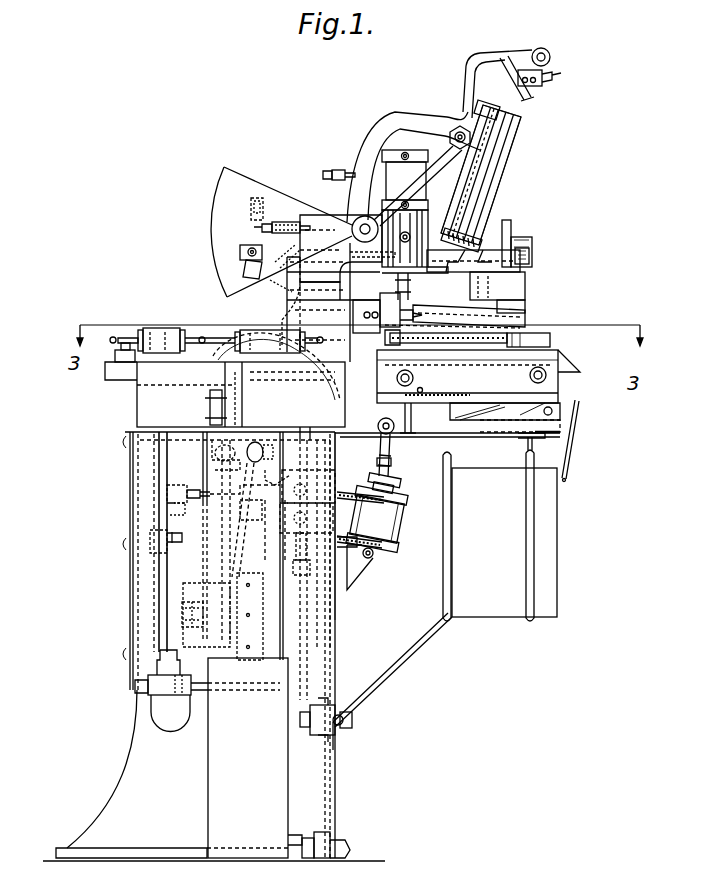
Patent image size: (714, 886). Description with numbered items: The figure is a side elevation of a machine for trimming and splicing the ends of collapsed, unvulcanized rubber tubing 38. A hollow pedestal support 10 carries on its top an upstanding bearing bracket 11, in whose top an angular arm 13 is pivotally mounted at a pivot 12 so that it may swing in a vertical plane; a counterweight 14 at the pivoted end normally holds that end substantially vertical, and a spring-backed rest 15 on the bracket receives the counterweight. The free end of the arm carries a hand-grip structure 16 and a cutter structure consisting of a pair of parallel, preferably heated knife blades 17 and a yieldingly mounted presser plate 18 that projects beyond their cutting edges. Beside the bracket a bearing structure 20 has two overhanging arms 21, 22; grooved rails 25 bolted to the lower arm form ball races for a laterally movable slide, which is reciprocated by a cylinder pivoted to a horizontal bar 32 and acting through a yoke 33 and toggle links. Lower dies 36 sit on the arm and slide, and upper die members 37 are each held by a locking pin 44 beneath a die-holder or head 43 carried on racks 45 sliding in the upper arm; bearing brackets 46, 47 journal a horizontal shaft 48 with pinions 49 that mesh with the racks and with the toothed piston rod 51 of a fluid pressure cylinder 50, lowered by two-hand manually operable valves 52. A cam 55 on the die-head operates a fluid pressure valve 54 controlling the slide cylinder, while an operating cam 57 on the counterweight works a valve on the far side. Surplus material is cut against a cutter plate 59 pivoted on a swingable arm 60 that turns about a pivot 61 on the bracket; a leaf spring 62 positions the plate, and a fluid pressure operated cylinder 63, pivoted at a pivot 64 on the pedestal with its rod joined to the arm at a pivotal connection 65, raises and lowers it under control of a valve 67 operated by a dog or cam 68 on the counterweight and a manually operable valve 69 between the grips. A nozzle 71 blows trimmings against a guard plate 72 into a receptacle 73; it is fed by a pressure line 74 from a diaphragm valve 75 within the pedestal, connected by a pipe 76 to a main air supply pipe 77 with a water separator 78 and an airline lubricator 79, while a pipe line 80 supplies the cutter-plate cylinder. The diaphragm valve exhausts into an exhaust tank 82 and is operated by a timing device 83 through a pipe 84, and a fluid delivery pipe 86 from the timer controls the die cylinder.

The pedestal support 10 is at (135, 590).
The bearing bracket 11 is at (315, 218).
The pivot 12 is at (360, 222).
The angular arm 13 is at (374, 127).
The counterweight 14 is at (215, 200).
The spring-backed rest 15 is at (280, 282).
The hand-grip structure 16 is at (543, 48).
The knife blades 17 is at (514, 146).
The presser plate 18 is at (517, 168).
The bearing structure 20 is at (150, 400).
The arm 21 is at (526, 286).
The arm 22 is at (568, 396).
The rails 25 is at (413, 377).
The horizontal bar 32 is at (120, 352).
The yoke 33 is at (276, 373).
The lower dies 36 is at (548, 343).
The upper die members 37 is at (510, 325).
The rubber tubing 38 is at (494, 334).
The die-holder or head 43 is at (505, 322).
The locking pin 44 is at (430, 292).
The racks 45 is at (512, 225).
The bearing bracket 46 is at (360, 215).
The bearing bracket 47 is at (524, 240).
The horizontal shaft 48 is at (490, 235).
The pinions 49 is at (532, 254).
The fluid pressure cylinder 50 is at (415, 172).
The piston rod 51 is at (424, 215).
The manually operable valves 52 is at (418, 250).
The fluid pressure valve 54 is at (390, 300).
The cam 55 is at (400, 296).
The operating cam 57 is at (248, 216).
The cutter plate 59 is at (560, 420).
The swingable arm 60 is at (414, 412).
The pivot 61 is at (338, 402).
The leaf spring 62 is at (505, 417).
The fluid pressure operated cylinder 63 is at (396, 527).
The pivot 64 is at (370, 557).
The pivotal connection 65 is at (390, 445).
The valve 67 is at (270, 220).
The dog or cam 68 is at (240, 252).
The manually operable valve 69 is at (560, 70).
The nozzle 71 is at (423, 390).
The guard plate 72 is at (580, 420).
The receptacle 73 is at (548, 530).
The pressure line 74 is at (248, 332).
The diaphragm valve 75 is at (332, 456).
The pipe 76 is at (330, 645).
The main air supply pipe 77 is at (340, 726).
The water separator 78 is at (290, 770).
The airline lubricator 79 is at (170, 735).
The pipe line 80 is at (160, 612).
The exhaust tank 82 is at (245, 520).
The timing device 83 is at (212, 586).
The pipe 84 is at (235, 514).
The fluid delivery pipe 86 is at (228, 548).